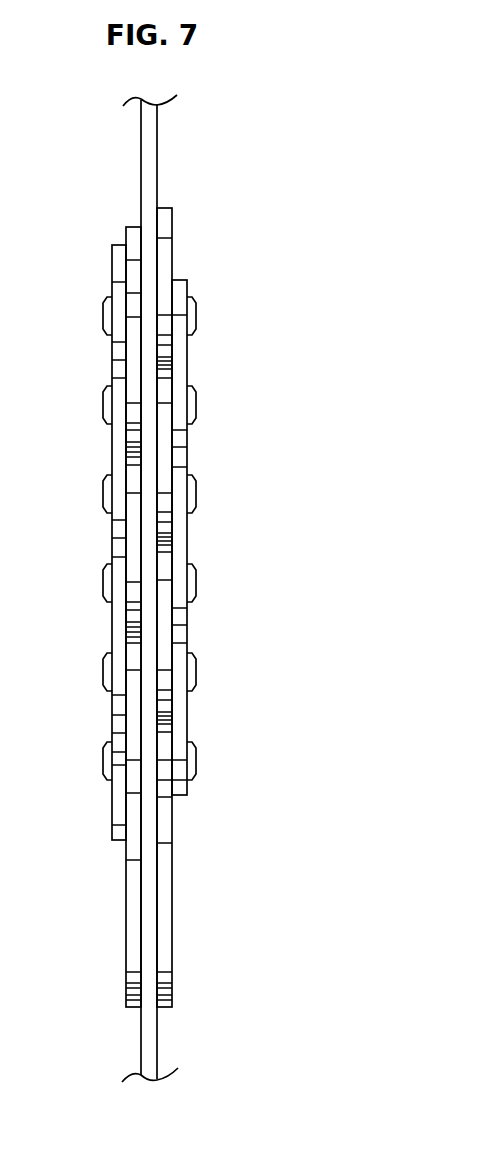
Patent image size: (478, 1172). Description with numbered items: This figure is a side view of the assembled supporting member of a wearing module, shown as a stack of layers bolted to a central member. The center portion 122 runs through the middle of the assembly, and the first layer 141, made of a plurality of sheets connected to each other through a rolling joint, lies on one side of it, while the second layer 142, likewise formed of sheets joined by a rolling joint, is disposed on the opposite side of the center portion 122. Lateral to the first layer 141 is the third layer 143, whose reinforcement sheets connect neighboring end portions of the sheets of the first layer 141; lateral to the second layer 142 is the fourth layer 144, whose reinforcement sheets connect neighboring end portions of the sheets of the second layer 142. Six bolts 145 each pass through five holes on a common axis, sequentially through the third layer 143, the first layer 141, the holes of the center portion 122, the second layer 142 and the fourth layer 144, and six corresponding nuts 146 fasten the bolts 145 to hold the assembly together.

The center portion 122 is at (157, 157).
The first layer 141 is at (191, 1006).
The second layer 142 is at (110, 1006).
The third layer 143 is at (200, 807).
The fourth layer 144 is at (100, 850).
The bolts 145 is at (213, 682).
The nuts 146 is at (85, 770).